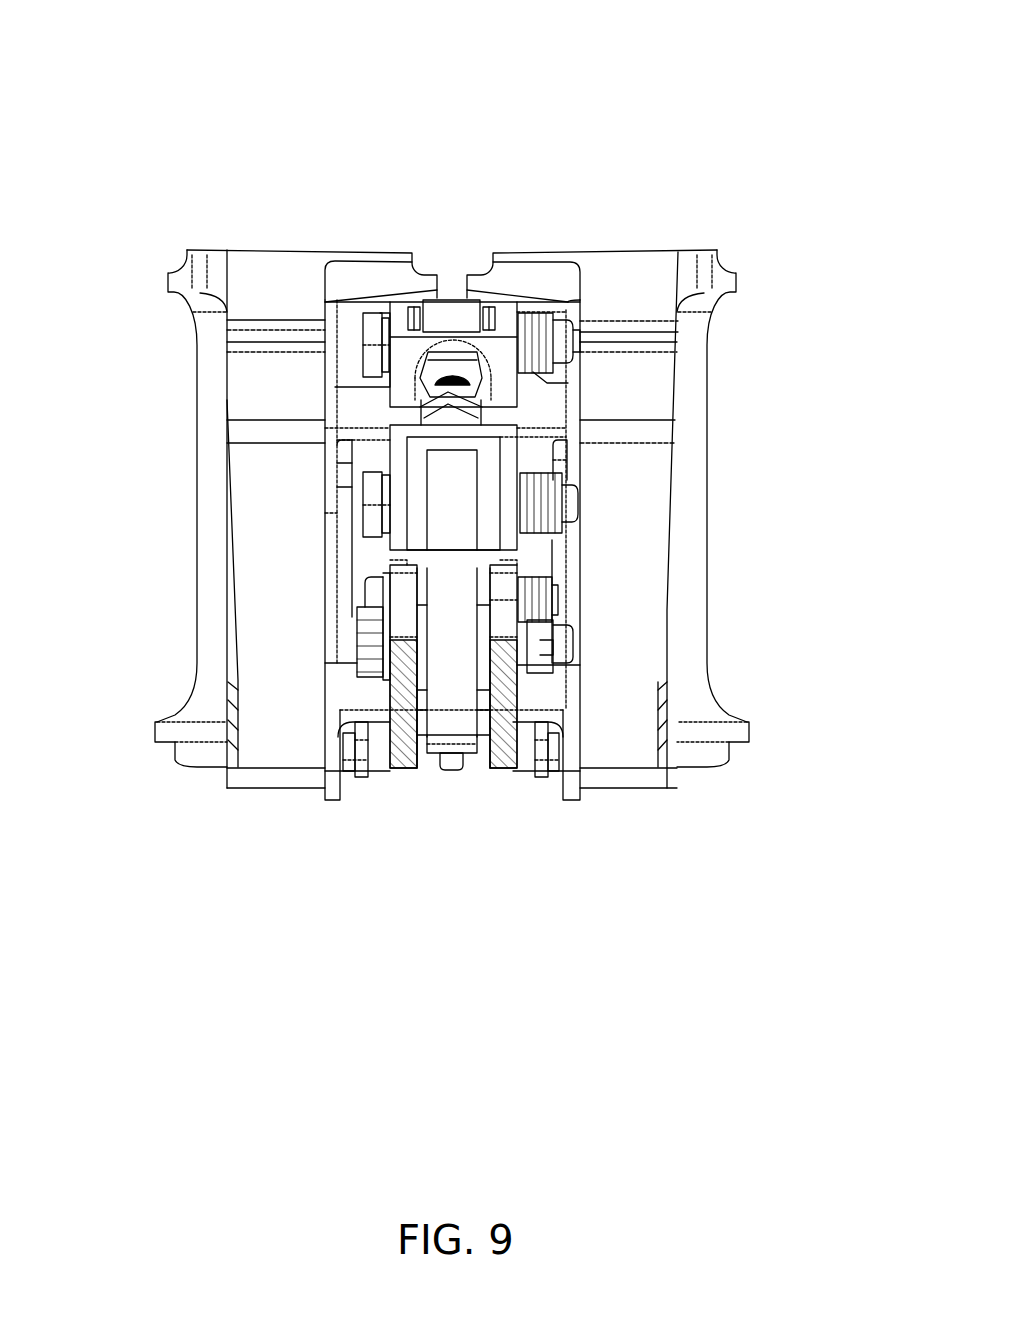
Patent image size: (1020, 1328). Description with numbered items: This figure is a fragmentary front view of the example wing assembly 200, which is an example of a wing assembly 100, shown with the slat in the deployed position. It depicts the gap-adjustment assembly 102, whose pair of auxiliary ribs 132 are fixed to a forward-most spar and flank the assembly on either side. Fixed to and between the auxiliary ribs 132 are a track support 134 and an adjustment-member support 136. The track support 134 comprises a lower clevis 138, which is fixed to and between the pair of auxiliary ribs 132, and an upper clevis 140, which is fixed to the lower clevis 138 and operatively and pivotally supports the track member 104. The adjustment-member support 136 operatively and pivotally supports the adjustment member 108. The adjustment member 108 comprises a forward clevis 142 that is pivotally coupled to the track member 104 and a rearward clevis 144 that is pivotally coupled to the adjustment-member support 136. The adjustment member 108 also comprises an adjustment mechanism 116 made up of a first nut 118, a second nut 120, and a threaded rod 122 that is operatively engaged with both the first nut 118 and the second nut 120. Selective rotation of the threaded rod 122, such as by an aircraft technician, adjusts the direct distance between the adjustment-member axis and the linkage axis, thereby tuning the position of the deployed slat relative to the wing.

The wing assembly 100 is at (781, 48).
The wing assembly 200 is at (776, 85).
The gap-adjustment assembly 102 is at (280, 366).
The track member 104 is at (473, 757).
The adjustment member 108 is at (324, 412).
The adjustment mechanism 116 is at (373, 403).
The first nut 118 is at (456, 352).
The second nut 120 is at (473, 417).
The threaded rod 122 is at (458, 387).
The auxiliary ribs 132 is at (195, 607).
The track support 134 is at (573, 803).
The adjustment-member support 136 is at (323, 433).
The lower clevis 138 is at (331, 800).
The upper clevis 140 is at (390, 563).
The forward clevis 142 is at (517, 453).
The rearward clevis 144 is at (513, 393).